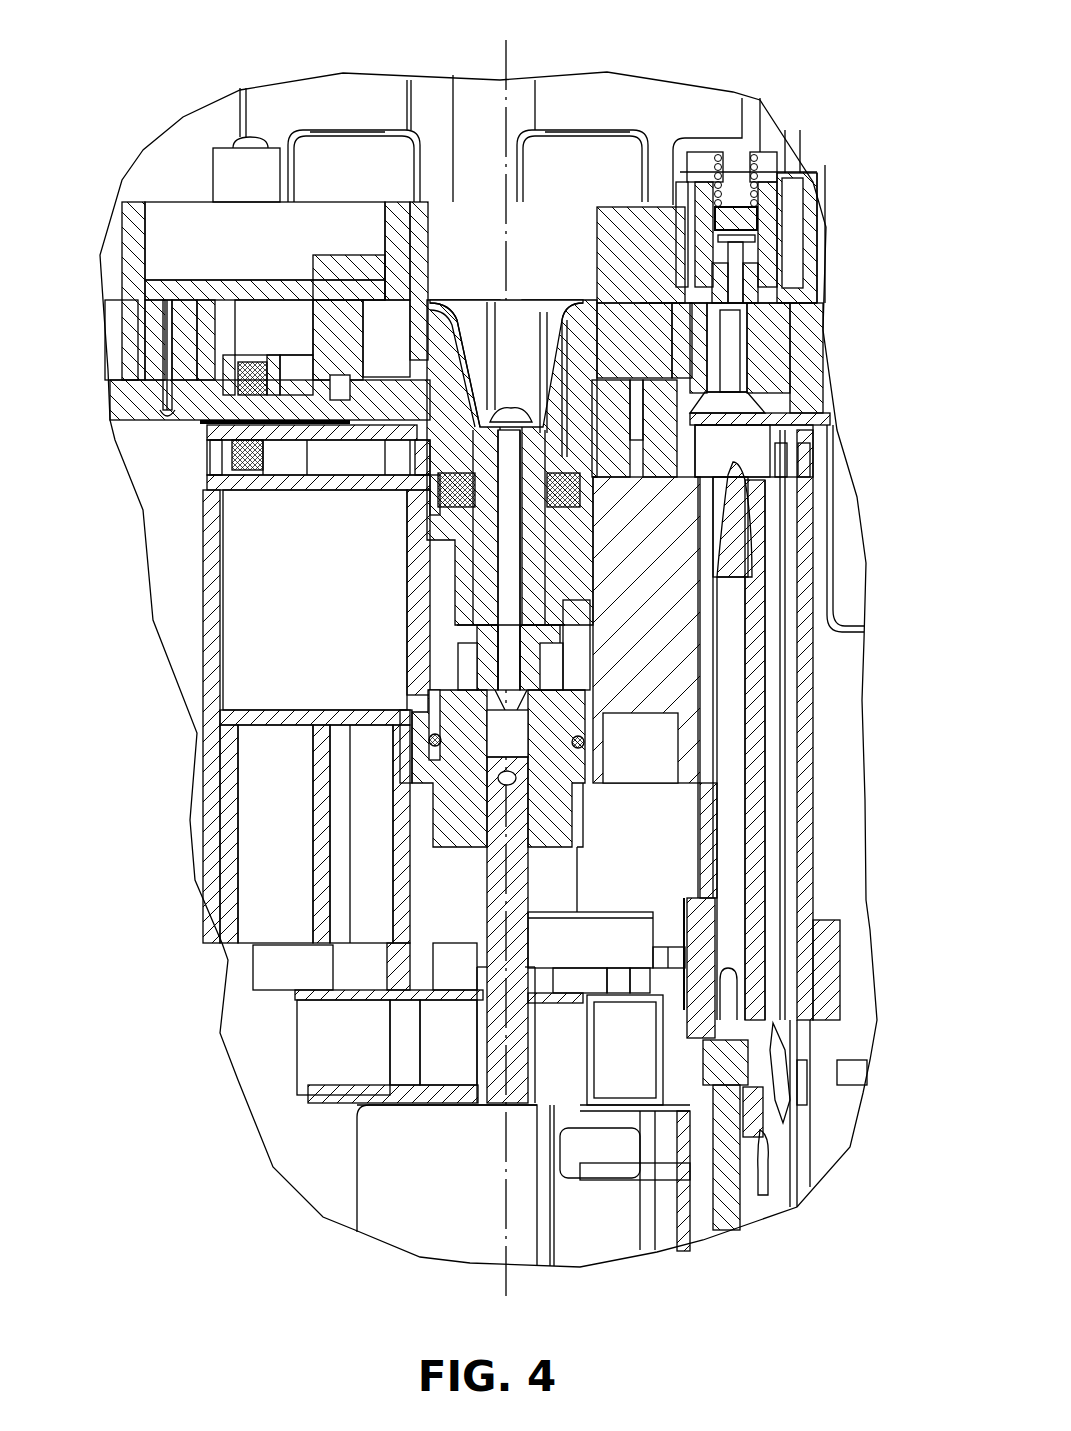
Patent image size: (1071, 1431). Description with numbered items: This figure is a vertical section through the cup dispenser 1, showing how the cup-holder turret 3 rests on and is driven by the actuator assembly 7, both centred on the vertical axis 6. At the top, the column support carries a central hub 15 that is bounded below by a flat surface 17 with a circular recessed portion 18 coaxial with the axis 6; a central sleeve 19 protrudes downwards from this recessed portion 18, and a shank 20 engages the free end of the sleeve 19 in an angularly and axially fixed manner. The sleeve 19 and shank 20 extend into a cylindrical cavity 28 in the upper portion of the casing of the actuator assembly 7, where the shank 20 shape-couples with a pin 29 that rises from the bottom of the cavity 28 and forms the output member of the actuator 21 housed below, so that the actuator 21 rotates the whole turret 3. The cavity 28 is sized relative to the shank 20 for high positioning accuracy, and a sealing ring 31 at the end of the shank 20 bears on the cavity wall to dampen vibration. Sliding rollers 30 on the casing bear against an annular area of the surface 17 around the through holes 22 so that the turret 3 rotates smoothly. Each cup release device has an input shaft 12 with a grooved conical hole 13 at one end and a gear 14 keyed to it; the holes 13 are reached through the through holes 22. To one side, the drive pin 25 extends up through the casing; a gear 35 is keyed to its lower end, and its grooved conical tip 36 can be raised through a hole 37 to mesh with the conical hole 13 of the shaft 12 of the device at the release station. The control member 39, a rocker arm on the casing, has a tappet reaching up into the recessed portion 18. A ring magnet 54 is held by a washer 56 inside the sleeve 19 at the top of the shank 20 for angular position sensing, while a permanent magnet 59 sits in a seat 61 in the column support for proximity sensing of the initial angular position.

The cup dispenser 1 is at (125, 92).
The cup-holder turret 3 is at (838, 335).
The vertical axis 6 is at (525, 50).
The actuator assembly 7 is at (303, 1152).
The shaft 12 is at (760, 292).
The grooved conical hole 13 is at (718, 370).
The gear 14 is at (770, 237).
The central hub 15 is at (330, 250).
The flat surface 17 is at (287, 430).
The recessed portion 18 is at (340, 412).
The central sleeve 19 is at (415, 510).
The shank 20 is at (470, 655).
The actuator 21 is at (455, 968).
The through holes 22 is at (815, 414).
The drive pin 25 is at (770, 696).
The cylindrical cavity 28 is at (615, 742).
The pin 29 is at (522, 876).
The sliding rollers 30 is at (215, 455).
The sealing ring 31 is at (430, 752).
The gear 35 is at (770, 1000).
The grooved conical tip 36 is at (760, 510).
The hole 37 is at (740, 528).
The control member 39 is at (700, 450).
The ring magnet 54 is at (585, 490).
The washer 56 is at (440, 540).
The permanent magnet 59 is at (165, 372).
The seat 61 is at (198, 392).